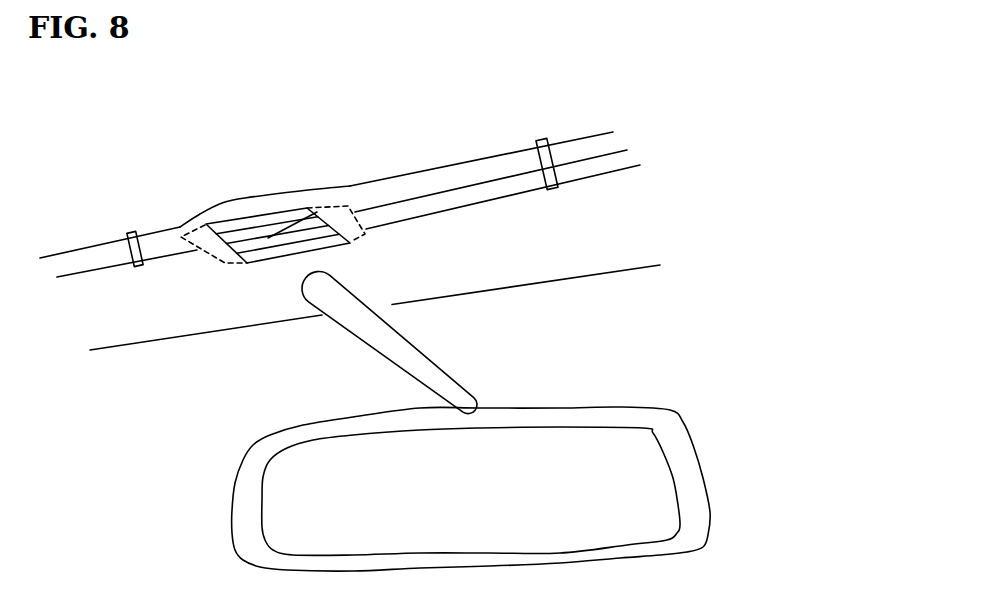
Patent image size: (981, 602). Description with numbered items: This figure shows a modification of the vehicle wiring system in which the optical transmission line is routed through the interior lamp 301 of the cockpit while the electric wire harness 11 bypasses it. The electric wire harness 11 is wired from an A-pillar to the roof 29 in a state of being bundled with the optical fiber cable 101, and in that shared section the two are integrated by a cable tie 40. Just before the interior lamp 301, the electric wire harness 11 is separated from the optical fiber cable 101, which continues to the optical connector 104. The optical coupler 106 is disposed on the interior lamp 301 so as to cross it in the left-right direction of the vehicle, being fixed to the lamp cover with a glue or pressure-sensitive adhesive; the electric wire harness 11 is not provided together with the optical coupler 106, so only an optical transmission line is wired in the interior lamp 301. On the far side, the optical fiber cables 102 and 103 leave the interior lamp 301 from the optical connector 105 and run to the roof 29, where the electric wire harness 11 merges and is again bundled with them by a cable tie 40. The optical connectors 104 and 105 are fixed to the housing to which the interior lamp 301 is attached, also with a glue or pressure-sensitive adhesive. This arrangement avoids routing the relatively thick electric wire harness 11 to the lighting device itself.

The electric wire harness 11 is at (68, 252).
The optical fiber cable 101 is at (120, 265).
The interior lamp 301 is at (229, 220).
The optical coupler 106 is at (270, 237).
The optical connector 104 is at (231, 263).
The optical connector 105 is at (367, 237).
The optical fiber cable 102 is at (460, 187).
The optical fiber cable 103 is at (483, 201).
The cable tie 40 is at (540, 139).
The roof 29 is at (158, 336).